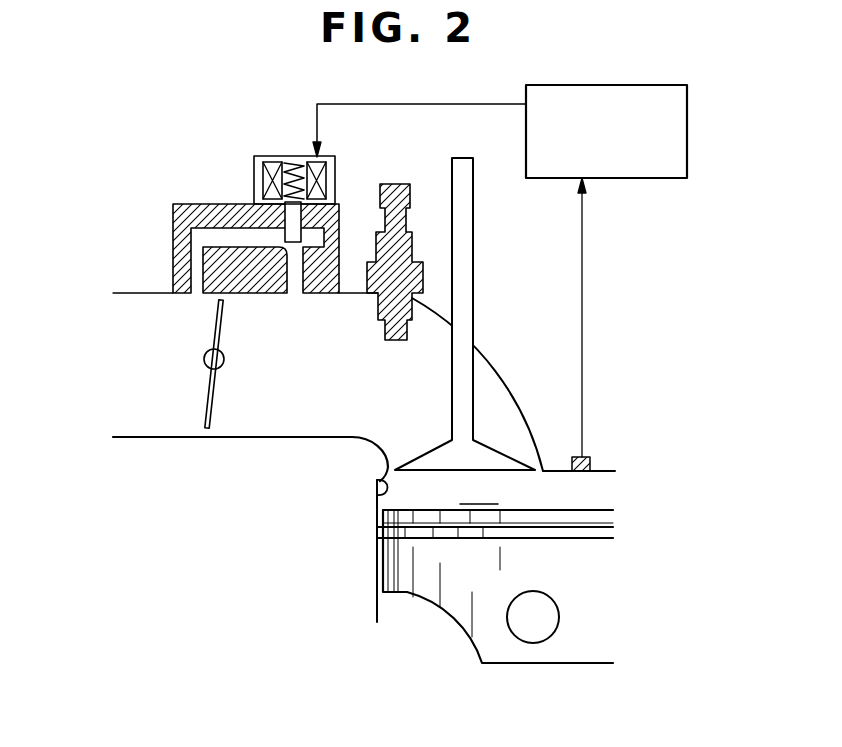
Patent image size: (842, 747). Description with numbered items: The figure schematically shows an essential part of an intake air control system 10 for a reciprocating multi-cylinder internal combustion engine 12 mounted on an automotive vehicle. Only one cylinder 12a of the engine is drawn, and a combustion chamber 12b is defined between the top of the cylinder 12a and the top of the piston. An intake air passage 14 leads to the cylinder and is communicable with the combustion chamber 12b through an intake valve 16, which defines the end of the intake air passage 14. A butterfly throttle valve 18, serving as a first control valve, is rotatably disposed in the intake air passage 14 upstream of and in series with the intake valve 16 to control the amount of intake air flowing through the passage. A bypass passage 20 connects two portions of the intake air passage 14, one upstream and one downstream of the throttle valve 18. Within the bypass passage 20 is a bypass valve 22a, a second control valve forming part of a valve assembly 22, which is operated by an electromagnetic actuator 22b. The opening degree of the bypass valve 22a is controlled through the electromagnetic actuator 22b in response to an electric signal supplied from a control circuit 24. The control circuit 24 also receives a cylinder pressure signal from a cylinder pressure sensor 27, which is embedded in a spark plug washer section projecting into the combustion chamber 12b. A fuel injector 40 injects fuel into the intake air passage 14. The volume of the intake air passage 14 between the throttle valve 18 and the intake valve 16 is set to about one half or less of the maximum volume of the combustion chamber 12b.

The intake air control system 10 is at (167, 153).
The internal combustion engine 12 is at (445, 571).
The cylinder 12a is at (379, 492).
The combustion chamber 12b is at (482, 492).
The intake air passage 14 is at (165, 437).
The intake valve 16 is at (492, 458).
The throttle valve 18 is at (213, 402).
The bypass passage 20 is at (193, 236).
The valve assembly 22 is at (336, 177).
The bypass valve 22a is at (288, 218).
The electromagnetic actuator 22b is at (270, 162).
The control circuit 24 is at (654, 179).
The cylinder pressure sensor 27 is at (590, 460).
The fuel injector 40 is at (395, 188).